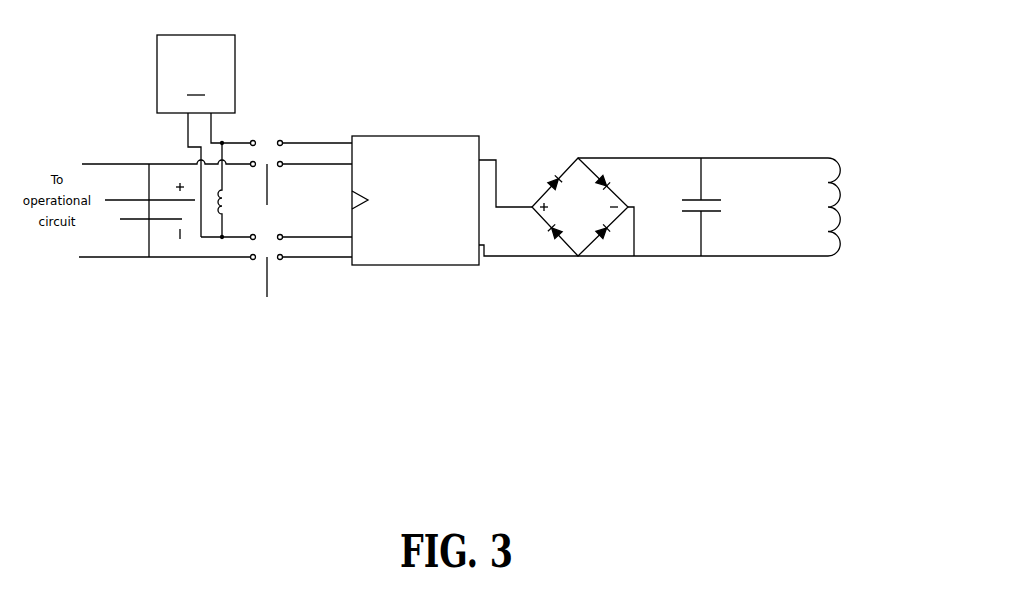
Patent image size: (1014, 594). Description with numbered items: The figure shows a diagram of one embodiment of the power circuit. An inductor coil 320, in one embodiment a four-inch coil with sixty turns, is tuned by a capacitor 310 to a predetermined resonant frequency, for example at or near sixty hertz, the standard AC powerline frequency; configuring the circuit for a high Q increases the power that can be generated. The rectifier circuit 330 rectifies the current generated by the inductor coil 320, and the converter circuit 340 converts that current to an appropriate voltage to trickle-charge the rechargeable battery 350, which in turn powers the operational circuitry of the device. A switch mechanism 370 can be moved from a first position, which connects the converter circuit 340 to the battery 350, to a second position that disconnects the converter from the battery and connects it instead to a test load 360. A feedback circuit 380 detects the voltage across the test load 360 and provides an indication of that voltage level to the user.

The capacitor 310 is at (726, 206).
The inductor coil 320 is at (825, 258).
The rectifier circuit 330 is at (570, 157).
The converter circuit 340 is at (427, 208).
The rechargeable battery 350 is at (149, 258).
The test load 360 is at (229, 192).
The switch mechanism 370 is at (275, 287).
The feedback circuit 380 is at (204, 136).